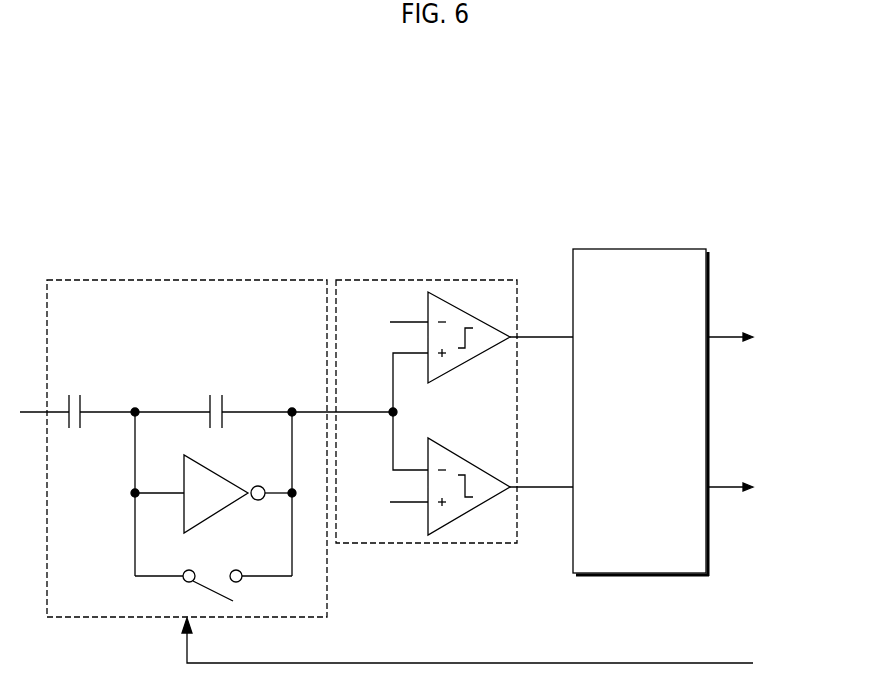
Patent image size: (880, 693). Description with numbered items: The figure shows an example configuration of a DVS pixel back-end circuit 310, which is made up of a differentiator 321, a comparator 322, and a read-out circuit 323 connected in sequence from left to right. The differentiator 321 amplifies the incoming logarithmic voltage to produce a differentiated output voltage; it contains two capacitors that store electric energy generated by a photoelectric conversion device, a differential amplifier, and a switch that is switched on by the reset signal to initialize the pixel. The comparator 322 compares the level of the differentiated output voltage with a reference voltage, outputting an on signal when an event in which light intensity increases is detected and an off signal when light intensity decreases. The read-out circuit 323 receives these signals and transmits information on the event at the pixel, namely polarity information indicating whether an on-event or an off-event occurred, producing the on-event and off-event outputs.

The pixel circuit 310 is at (368, 168).
The differentiator 321 is at (185, 277).
The comparator 322 is at (426, 278).
The read-out circuit 323 is at (637, 248).